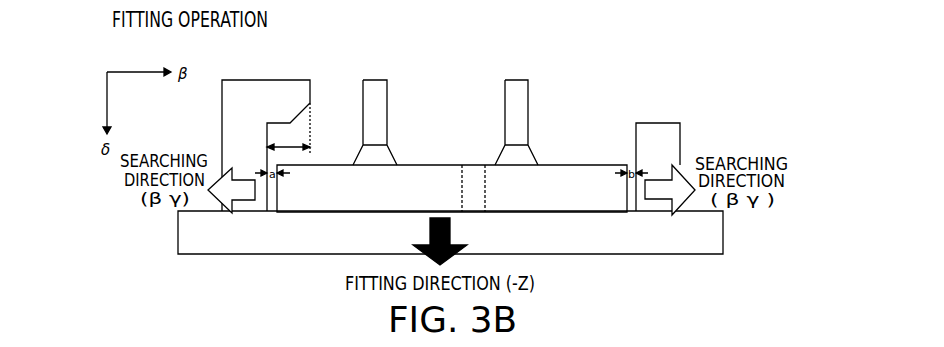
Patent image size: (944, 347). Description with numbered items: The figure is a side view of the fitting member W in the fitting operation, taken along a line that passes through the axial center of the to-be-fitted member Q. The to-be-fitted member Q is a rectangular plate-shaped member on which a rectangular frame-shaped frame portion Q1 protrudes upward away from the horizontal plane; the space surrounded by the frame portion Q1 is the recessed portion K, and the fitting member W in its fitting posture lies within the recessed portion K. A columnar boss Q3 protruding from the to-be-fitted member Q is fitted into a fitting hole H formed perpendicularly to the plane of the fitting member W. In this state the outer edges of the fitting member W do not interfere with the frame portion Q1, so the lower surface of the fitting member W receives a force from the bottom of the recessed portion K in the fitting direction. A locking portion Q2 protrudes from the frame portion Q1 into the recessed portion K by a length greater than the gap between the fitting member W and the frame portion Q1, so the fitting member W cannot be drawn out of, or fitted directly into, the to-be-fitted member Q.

The to-be-fitted member Q is at (723, 230).
The frame portion Q1 is at (675, 123).
The locking portion Q2 is at (268, 80).
The boss Q3 is at (485, 197).
The fitting member W is at (548, 164).
The recessed portion K is at (447, 132).
The fitting hole H is at (472, 193).